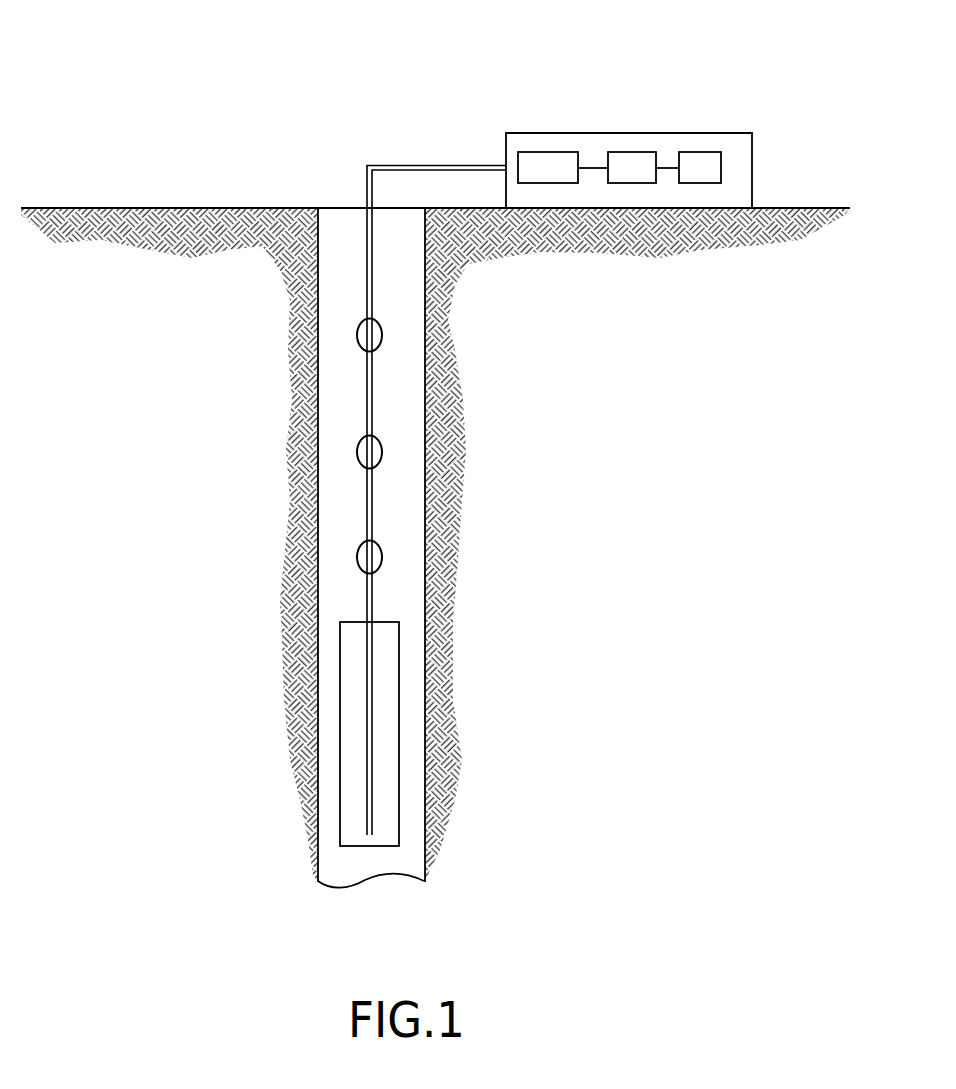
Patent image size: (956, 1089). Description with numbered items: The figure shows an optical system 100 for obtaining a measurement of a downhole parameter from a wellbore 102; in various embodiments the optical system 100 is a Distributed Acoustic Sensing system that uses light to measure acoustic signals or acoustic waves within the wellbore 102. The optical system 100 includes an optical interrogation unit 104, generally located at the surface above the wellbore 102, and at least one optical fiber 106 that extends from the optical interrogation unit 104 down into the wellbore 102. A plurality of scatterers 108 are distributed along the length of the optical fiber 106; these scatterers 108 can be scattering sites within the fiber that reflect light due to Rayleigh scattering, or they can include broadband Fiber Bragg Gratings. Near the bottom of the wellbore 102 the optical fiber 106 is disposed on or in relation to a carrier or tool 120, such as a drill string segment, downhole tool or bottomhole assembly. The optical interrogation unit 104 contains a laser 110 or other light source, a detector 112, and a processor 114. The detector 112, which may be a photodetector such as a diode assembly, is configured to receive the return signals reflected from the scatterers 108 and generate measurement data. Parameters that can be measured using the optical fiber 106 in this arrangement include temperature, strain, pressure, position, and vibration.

The optical system 100 is at (292, 85).
The wellbore 102 is at (338, 405).
The optical interrogation unit 104 is at (515, 132).
The optical fiber 106 is at (366, 184).
The scatterers 108 is at (378, 545).
The laser 110 is at (553, 156).
The detector 112 is at (633, 157).
The processor 114 is at (700, 157).
The tool 120 is at (350, 833).